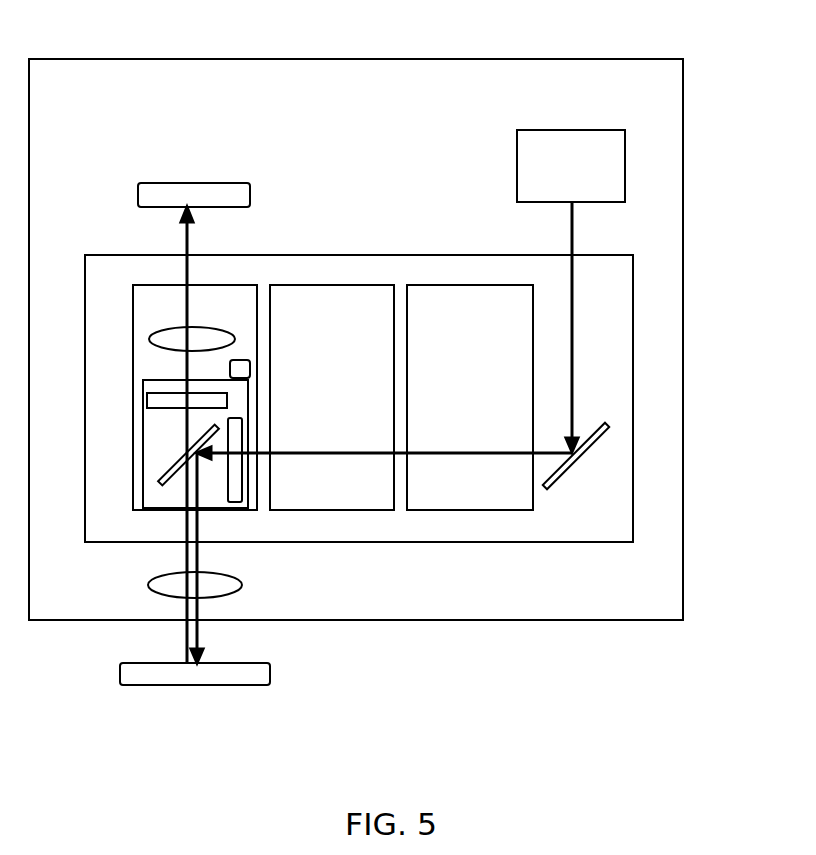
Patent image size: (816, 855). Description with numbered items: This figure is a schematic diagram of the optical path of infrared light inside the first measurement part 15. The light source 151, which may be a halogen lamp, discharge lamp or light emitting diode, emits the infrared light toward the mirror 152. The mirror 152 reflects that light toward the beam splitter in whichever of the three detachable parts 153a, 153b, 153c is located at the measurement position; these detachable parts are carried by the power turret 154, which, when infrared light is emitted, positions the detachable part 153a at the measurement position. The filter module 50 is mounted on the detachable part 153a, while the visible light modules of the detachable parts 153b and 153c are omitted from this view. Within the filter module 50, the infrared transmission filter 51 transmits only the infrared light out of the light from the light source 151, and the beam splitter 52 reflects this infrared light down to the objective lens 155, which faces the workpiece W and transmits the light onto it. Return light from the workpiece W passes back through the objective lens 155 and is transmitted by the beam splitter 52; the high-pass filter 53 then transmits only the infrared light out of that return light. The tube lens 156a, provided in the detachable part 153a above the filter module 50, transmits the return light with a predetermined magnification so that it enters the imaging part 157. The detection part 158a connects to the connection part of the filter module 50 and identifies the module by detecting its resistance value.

The first measurement part 15 is at (356, 310).
The light source 151 is at (579, 140).
The mirror 152 is at (577, 504).
The detachable part 153a is at (188, 360).
The detachable part 153b is at (334, 359).
The detachable part 153c is at (470, 359).
The power turret 154 is at (416, 398).
The objective lens 155 is at (234, 599).
The tube lens 156a is at (141, 283).
The imaging part 157 is at (194, 165).
The detection part 158a is at (265, 260).
The filter module 50 is at (174, 494).
The infrared transmission filter 51 is at (258, 500).
The beam splitter 52 is at (132, 454).
The high-pass filter 53 is at (136, 388).
The workpiece W is at (195, 715).